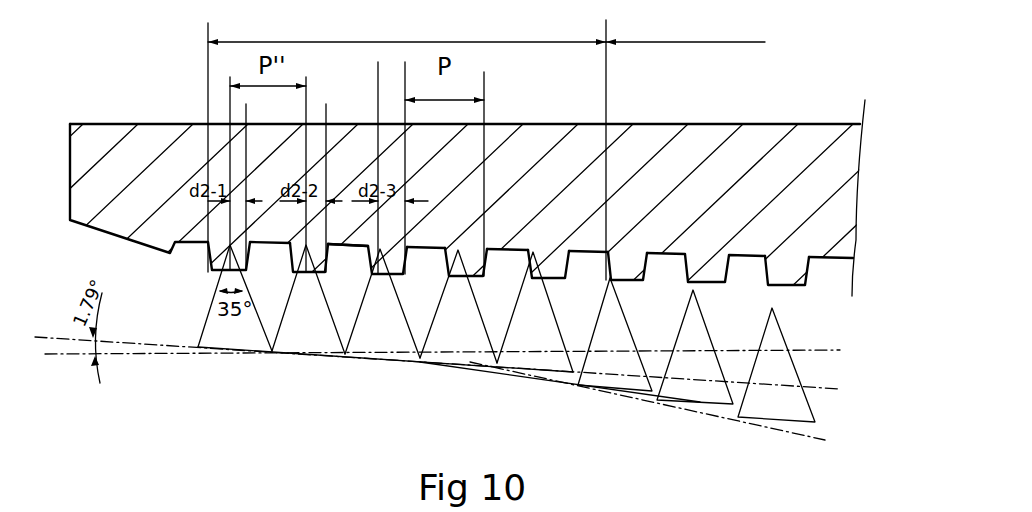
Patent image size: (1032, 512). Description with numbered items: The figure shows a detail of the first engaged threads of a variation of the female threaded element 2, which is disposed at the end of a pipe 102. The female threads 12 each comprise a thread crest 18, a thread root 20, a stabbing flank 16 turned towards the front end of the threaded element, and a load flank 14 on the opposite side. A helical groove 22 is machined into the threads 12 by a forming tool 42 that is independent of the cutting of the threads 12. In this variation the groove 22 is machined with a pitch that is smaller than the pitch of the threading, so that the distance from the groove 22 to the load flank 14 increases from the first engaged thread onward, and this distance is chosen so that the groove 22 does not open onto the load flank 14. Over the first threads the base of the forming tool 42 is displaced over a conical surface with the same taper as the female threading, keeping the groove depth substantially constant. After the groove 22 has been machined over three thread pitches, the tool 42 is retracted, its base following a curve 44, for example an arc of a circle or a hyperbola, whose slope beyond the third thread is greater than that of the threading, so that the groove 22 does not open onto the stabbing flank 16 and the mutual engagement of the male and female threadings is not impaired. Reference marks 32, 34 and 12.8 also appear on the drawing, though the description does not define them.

The female threaded element 2 is at (465, 160).
The pipe 102 is at (768, 138).
The first thread section 32 is at (407, 142).
The second thread section 34 is at (685, 24).
The female threads 12 is at (630, 289).
The load flank 14 is at (412, 258).
The stabbing flank 16 is at (364, 250).
The thread crest 18 is at (543, 280).
The thread root 20 is at (504, 252).
The helical groove 22 is at (305, 276).
The forming tool 42 is at (210, 350).
The curve 44 is at (717, 413).
The end thread groove 12.8 is at (808, 285).